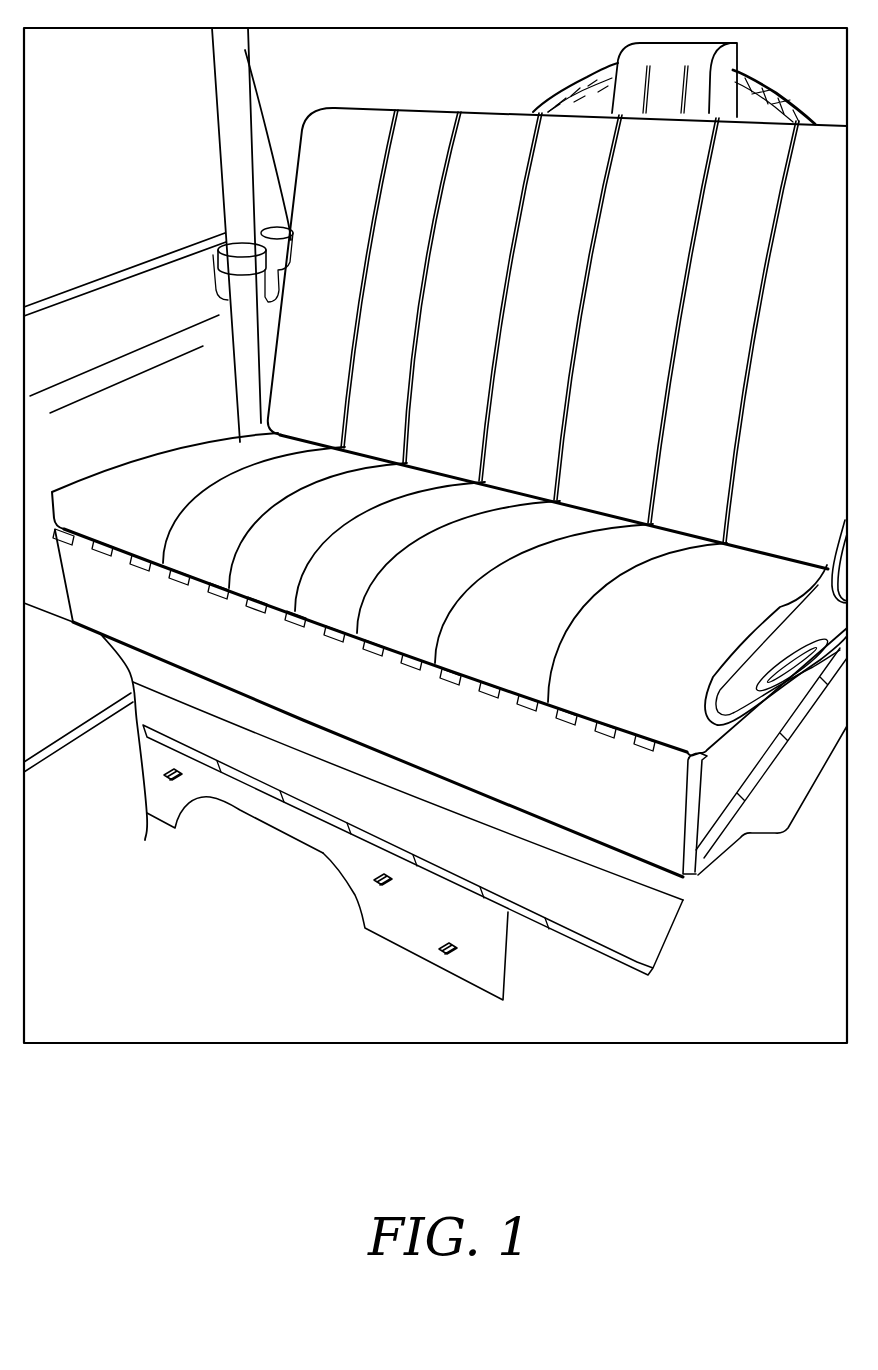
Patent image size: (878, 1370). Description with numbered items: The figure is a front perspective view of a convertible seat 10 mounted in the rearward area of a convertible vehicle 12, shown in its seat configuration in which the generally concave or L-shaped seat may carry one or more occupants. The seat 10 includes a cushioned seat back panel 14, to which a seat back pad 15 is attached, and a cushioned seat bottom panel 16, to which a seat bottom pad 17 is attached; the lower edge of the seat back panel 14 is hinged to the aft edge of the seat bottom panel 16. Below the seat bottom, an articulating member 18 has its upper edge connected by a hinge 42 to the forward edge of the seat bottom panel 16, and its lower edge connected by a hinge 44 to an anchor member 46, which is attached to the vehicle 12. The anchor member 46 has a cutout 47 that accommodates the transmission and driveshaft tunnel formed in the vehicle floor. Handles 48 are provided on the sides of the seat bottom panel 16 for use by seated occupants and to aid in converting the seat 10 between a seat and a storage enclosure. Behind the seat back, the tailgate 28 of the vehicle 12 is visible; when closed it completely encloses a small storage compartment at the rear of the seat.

The convertible seat 10 is at (435, 514).
The convertible vehicle 12 is at (223, 393).
The cushioned seat back panel 14 is at (557, 334).
The seat back pad 15 is at (483, 120).
The cushioned seat bottom panel 16 is at (449, 590).
The seat bottom pad 17 is at (449, 590).
The articulating member 18 is at (113, 623).
The tailgate 28 is at (738, 55).
The hinge 42 is at (258, 608).
The hinge 44 is at (248, 784).
The anchor member 46 is at (402, 930).
The cutout 47 is at (273, 817).
The handles 48 is at (803, 650).